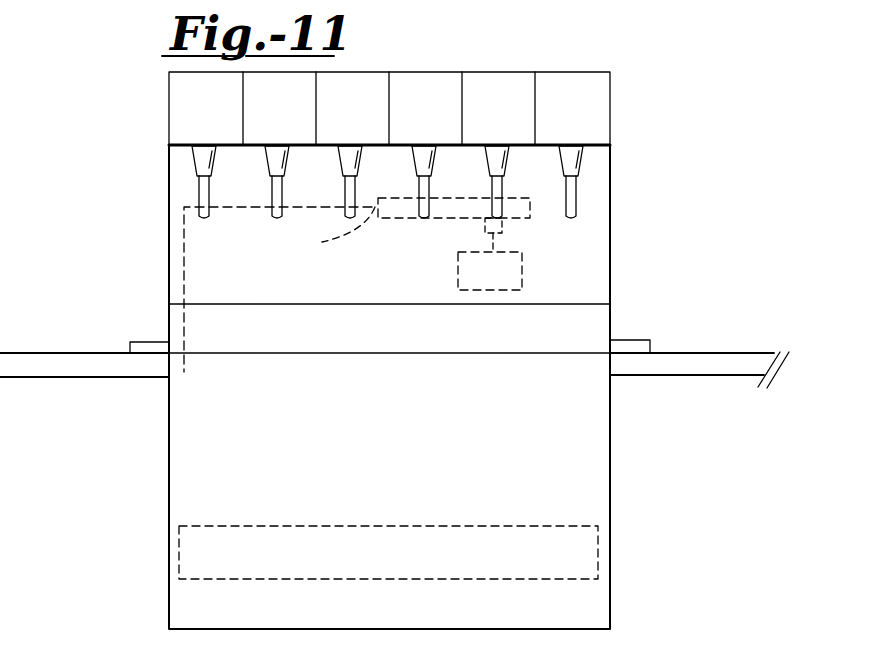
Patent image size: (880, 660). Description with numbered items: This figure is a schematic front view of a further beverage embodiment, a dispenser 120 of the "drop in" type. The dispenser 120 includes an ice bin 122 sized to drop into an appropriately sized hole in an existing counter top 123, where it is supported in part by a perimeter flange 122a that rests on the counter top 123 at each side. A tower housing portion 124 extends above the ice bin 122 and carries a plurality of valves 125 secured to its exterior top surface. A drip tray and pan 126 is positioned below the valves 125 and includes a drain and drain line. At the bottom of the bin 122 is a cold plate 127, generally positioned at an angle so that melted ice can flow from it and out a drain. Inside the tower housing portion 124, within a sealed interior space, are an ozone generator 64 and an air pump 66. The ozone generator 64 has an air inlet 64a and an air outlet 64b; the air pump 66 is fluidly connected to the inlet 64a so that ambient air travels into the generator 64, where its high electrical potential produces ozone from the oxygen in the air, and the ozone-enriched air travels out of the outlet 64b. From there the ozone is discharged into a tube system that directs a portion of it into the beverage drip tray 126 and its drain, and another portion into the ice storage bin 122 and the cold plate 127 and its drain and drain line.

The dispenser 120 is at (636, 88).
The ice bin 122 is at (169, 490).
The perimeter flange 122a is at (140, 342).
The counter top 123 is at (14, 378).
The tower housing portion 124 is at (166, 225).
The valves 125 is at (600, 137).
The drip tray and pan 126 is at (288, 304).
The cold plate 127 is at (277, 526).
The ozone generator 64 is at (531, 218).
The air inlet 64a is at (480, 227).
The air outlet 64b is at (323, 231).
The air pump 66 is at (458, 285).